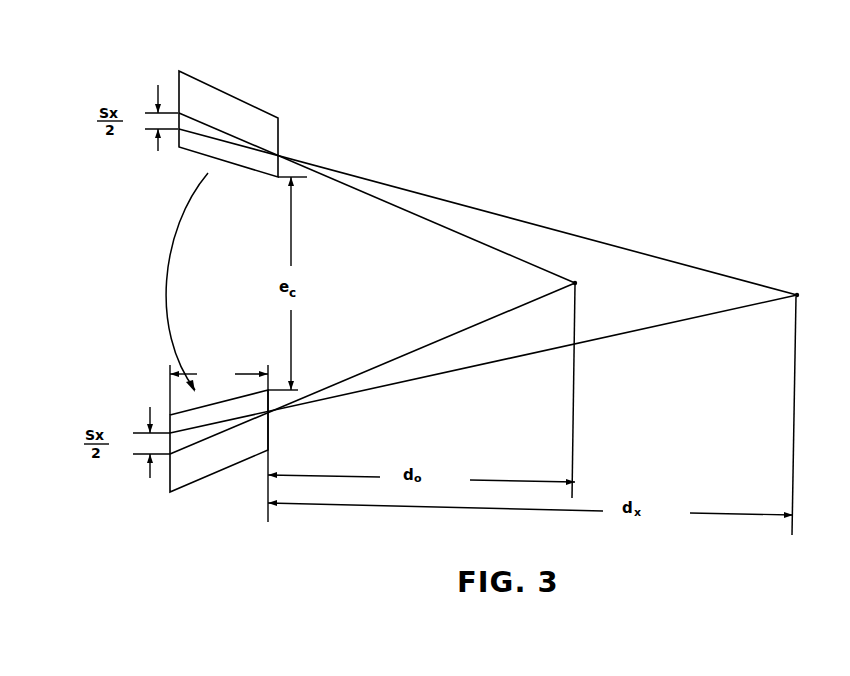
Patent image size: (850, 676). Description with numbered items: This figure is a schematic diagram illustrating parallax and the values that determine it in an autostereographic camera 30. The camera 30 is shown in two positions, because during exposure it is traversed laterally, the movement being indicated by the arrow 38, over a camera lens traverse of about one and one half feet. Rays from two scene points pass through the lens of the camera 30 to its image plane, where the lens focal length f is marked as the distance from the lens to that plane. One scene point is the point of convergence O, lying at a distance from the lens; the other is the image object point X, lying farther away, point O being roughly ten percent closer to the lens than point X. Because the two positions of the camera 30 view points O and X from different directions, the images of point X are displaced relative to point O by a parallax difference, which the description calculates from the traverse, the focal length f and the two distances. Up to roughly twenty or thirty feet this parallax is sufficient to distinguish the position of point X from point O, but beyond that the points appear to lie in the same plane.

The autostereographic camera 30 is at (247, 100).
The arrow 38 is at (166, 273).
The point of convergence O is at (583, 387).
The image object point X is at (806, 411).
The lens focal length f is at (219, 443).